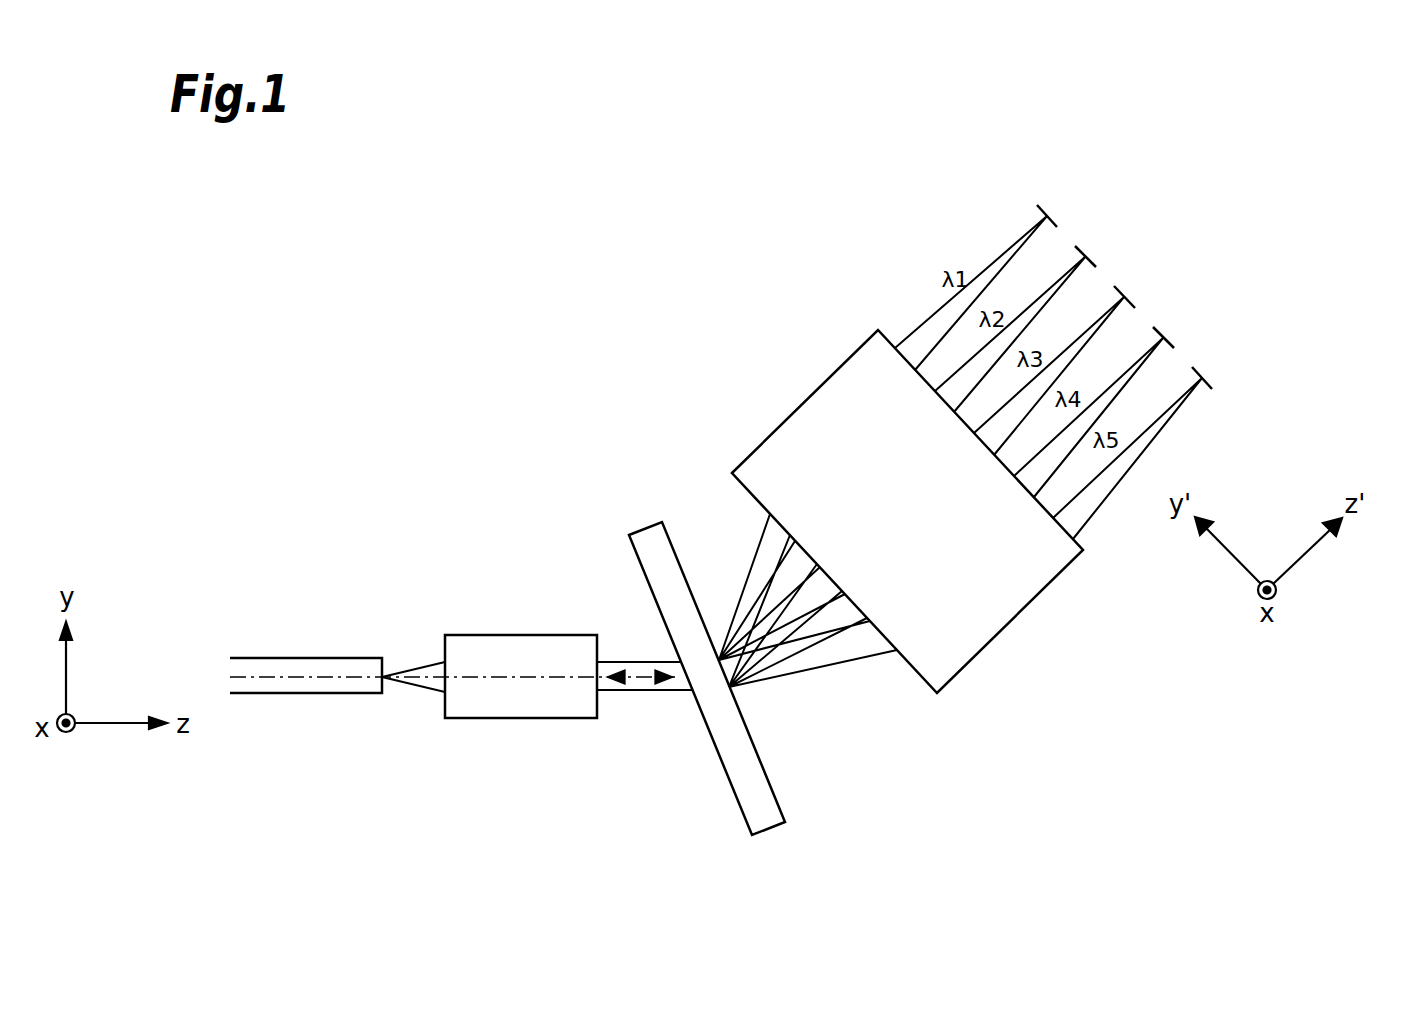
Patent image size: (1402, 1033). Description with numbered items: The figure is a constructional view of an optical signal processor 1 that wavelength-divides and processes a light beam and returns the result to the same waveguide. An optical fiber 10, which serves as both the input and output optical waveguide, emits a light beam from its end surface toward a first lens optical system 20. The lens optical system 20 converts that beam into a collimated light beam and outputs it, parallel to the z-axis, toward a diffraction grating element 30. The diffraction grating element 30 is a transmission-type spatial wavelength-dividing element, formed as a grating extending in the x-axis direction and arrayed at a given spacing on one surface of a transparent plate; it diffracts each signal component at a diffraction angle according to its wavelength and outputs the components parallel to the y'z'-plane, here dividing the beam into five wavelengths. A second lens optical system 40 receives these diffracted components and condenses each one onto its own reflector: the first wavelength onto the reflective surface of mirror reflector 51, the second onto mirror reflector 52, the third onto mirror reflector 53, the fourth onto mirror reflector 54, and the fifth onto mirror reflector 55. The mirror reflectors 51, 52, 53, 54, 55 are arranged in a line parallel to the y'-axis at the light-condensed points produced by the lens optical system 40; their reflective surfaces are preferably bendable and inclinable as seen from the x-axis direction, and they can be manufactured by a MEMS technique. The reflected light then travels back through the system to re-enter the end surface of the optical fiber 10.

The optical signal processor 1 is at (507, 312).
The optical fiber 10 is at (280, 658).
The first lens optical system 20 is at (481, 635).
The diffraction grating element 30 is at (640, 528).
The second lens optical system 40 is at (803, 400).
The mirror reflector 51 is at (1059, 224).
The mirror reflector 52 is at (1098, 265).
The mirror reflector 53 is at (1137, 306).
The mirror reflector 54 is at (1176, 346).
The mirror reflector 55 is at (1214, 387).